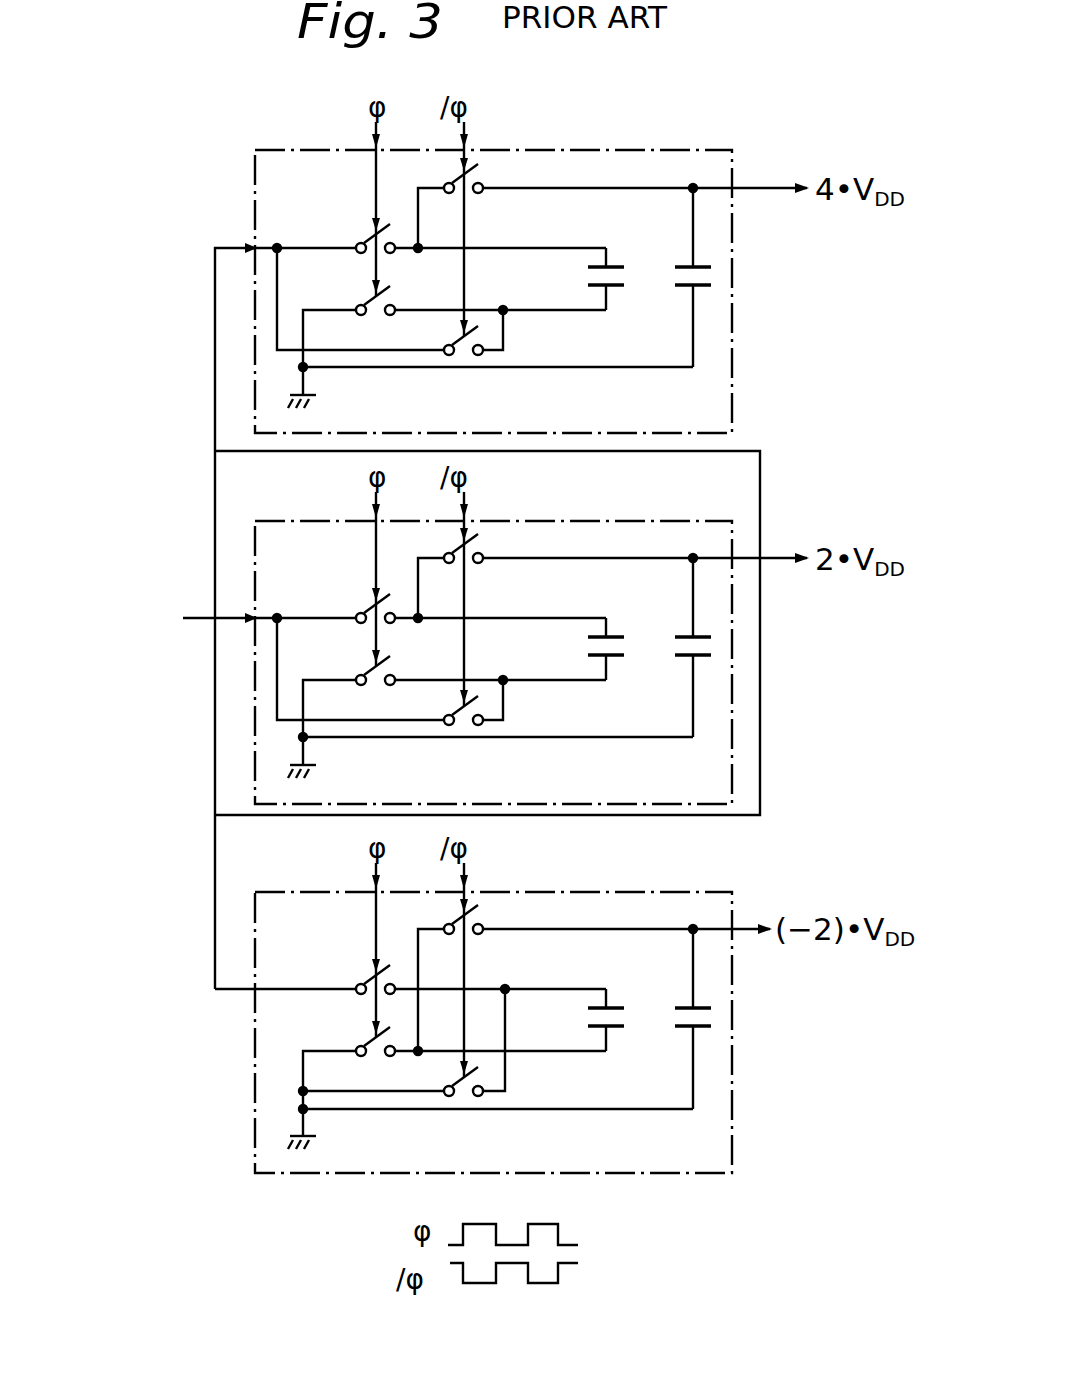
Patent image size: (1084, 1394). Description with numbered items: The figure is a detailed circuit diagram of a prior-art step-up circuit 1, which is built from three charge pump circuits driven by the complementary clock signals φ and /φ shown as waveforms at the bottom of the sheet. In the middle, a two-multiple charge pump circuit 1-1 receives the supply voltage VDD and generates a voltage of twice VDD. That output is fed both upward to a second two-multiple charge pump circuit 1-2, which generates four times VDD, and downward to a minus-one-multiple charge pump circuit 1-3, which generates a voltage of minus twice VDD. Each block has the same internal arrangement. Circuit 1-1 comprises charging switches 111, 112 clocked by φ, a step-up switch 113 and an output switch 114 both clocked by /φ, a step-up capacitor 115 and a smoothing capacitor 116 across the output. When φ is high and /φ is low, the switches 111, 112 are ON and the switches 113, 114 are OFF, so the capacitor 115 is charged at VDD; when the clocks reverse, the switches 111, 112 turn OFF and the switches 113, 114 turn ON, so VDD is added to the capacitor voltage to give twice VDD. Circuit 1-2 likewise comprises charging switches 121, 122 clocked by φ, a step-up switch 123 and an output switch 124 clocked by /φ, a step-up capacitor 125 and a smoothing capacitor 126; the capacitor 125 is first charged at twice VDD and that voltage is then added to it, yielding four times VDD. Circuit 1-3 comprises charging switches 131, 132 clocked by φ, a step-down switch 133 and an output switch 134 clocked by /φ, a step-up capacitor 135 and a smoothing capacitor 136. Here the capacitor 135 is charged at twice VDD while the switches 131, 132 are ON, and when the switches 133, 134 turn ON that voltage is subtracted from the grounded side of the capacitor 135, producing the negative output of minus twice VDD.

The step-up circuit 1 is at (190, 178).
The 2-multiple charge pump circuit 1-1 is at (682, 495).
The 2-multiple charge pump circuit 1-2 is at (682, 125).
The (−1)-multiple charge pump circuit 1-3 is at (683, 868).
The charging switch 111 is at (372, 608).
The charging switch 112 is at (370, 670).
The step-up switch 113 is at (460, 713).
The output switch 114 is at (460, 552).
The step-up capacitor 115 is at (613, 655).
The smoothing capacitor 116 is at (688, 635).
The charging switch 121 is at (372, 238).
The charging switch 122 is at (370, 300).
The step-up switch 123 is at (460, 343).
The output switch 124 is at (460, 182).
The step-up capacitor 125 is at (613, 285).
The smoothing capacitor 126 is at (688, 265).
The charging switch 131 is at (372, 979).
The charging switch 132 is at (370, 1041).
The step-down switch 133 is at (460, 1084).
The output switch 134 is at (460, 923).
The step-up capacitor 135 is at (613, 1026).
The smoothing capacitor 136 is at (688, 1006).